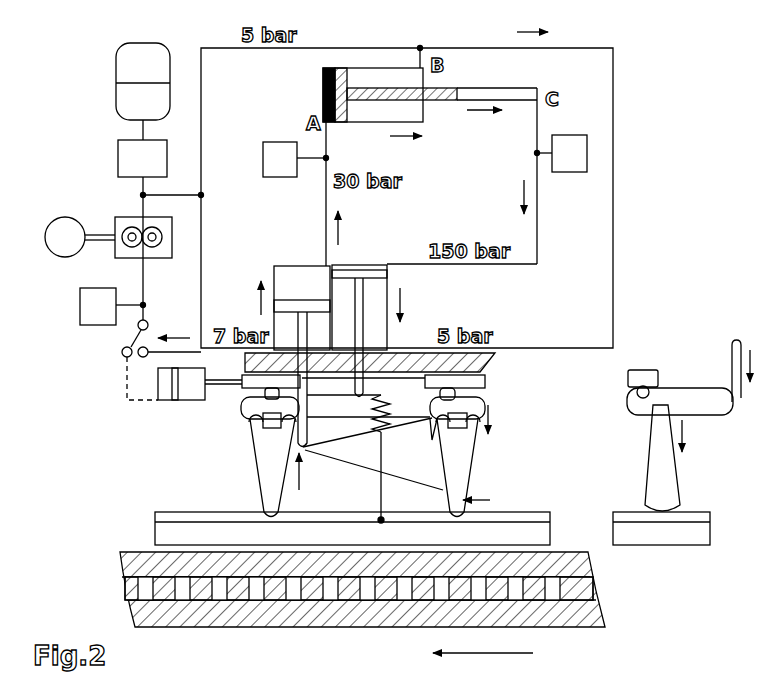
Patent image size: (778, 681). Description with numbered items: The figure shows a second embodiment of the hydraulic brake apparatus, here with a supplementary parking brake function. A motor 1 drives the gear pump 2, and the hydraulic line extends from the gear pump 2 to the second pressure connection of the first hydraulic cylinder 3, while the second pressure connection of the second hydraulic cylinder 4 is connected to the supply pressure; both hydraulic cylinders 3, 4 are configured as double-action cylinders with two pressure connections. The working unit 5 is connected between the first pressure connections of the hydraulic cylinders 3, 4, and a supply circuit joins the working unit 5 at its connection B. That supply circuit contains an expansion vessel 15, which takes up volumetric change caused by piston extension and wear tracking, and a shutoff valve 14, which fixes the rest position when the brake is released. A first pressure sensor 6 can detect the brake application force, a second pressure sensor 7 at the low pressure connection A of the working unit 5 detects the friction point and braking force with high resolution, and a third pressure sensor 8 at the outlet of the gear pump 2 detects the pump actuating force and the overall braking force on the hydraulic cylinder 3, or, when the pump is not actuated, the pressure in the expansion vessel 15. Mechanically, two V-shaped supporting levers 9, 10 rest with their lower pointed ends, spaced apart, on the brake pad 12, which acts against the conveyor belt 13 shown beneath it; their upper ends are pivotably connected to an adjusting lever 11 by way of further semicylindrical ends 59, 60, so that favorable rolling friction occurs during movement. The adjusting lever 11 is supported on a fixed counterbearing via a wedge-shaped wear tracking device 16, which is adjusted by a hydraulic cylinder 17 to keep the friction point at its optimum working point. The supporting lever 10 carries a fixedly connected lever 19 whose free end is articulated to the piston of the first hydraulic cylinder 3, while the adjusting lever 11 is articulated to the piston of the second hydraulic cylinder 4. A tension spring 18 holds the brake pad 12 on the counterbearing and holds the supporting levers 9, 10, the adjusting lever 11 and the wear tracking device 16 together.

The motor 1 is at (50, 226).
The gear pump 2 is at (118, 222).
The first hydraulic cylinder 3 is at (300, 266).
The second hydraulic cylinder 4 is at (362, 265).
The working unit 5 is at (425, 122).
The first pressure sensor 6 is at (587, 140).
The second pressure sensor 7 is at (283, 142).
The third pressure sensor 8 is at (80, 305).
The V-shaped supporting lever 9 is at (255, 486).
The V-shaped supporting lever 10 is at (476, 458).
The adjusting lever 11 is at (490, 402).
The brake pad 12 is at (158, 512).
The conveyor belt 13 is at (128, 555).
The shutoff valve 14 is at (118, 150).
The expansion vessel 15 is at (116, 70).
The wear tracking device 16 is at (242, 388).
The hydraulic cylinder 17 is at (162, 400).
The tension spring 18 is at (378, 450).
The lever 19 is at (352, 448).
The semicylindrical end 59 is at (485, 388).
The semicylindrical end 60 is at (468, 438).